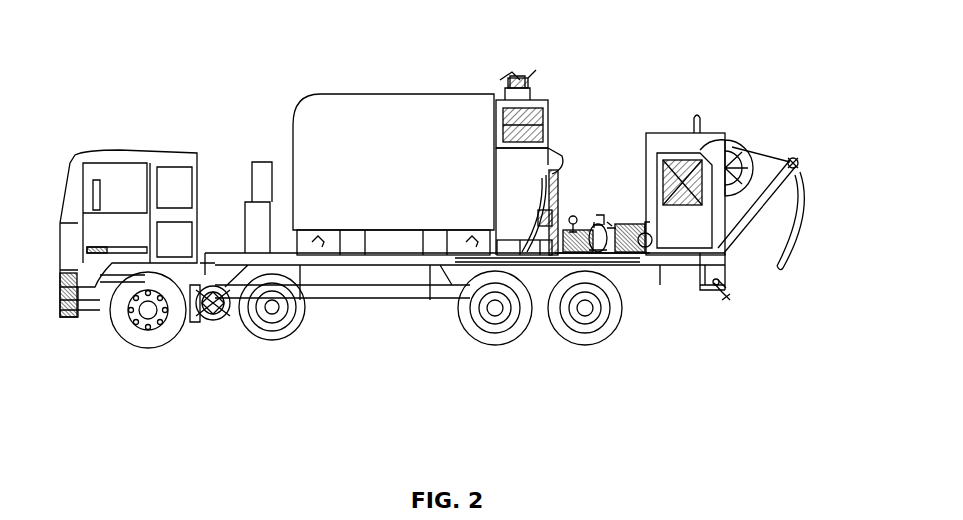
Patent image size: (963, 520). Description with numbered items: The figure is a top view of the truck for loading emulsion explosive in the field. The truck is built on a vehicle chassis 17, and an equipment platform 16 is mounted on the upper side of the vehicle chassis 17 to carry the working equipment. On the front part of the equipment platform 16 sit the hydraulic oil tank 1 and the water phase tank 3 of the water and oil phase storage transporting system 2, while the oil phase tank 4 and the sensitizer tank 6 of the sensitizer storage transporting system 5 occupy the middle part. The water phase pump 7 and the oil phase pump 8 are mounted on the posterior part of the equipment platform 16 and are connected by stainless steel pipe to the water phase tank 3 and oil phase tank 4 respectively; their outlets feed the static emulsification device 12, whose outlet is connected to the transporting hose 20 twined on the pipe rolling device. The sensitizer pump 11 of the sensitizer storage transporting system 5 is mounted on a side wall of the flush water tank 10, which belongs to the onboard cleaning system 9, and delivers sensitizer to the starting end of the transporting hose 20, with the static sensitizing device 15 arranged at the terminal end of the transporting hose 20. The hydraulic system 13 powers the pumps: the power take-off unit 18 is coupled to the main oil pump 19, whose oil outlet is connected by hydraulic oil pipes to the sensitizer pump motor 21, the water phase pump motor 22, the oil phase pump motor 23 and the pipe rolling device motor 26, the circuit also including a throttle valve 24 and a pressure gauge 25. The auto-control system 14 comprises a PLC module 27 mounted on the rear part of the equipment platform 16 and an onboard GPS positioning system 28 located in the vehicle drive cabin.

The hydraulic oil tank 1 is at (270, 158).
The water and oil phase storage transporting system 2 is at (310, 113).
The water phase tank 3 is at (338, 122).
The oil phase tank 4 is at (513, 160).
The sensitizer storage transporting system 5 is at (502, 85).
The sensitizer tank 6 is at (530, 100).
The water phase pump 7 is at (597, 232).
The oil phase pump 8 is at (607, 232).
The onboard cleaning system 9 is at (550, 170).
The flush water tank 10 is at (547, 210).
The sensitizer pump 11 is at (553, 255).
The static emulsification device 12 is at (593, 270).
The hydraulic system 13 is at (705, 240).
The auto-control system 14 is at (722, 292).
The static sensitizing device 15 is at (781, 266).
The equipment platform 16 is at (353, 255).
The vehicle chassis 17 is at (273, 320).
The power take-off unit 18 is at (227, 323).
The main oil pump 19 is at (197, 317).
The transporting hose 20 is at (750, 148).
The sensitizer pump motor 21 is at (533, 235).
The water phase pump motor 22 is at (600, 240).
The oil phase pump motor 23 is at (603, 230).
The throttle valve 24 is at (636, 250).
The pressure gauge 25 is at (645, 250).
The pipe rolling device motor 26 is at (706, 135).
The PLC module 27 is at (718, 252).
The onboard GPS positioning system 28 is at (93, 320).